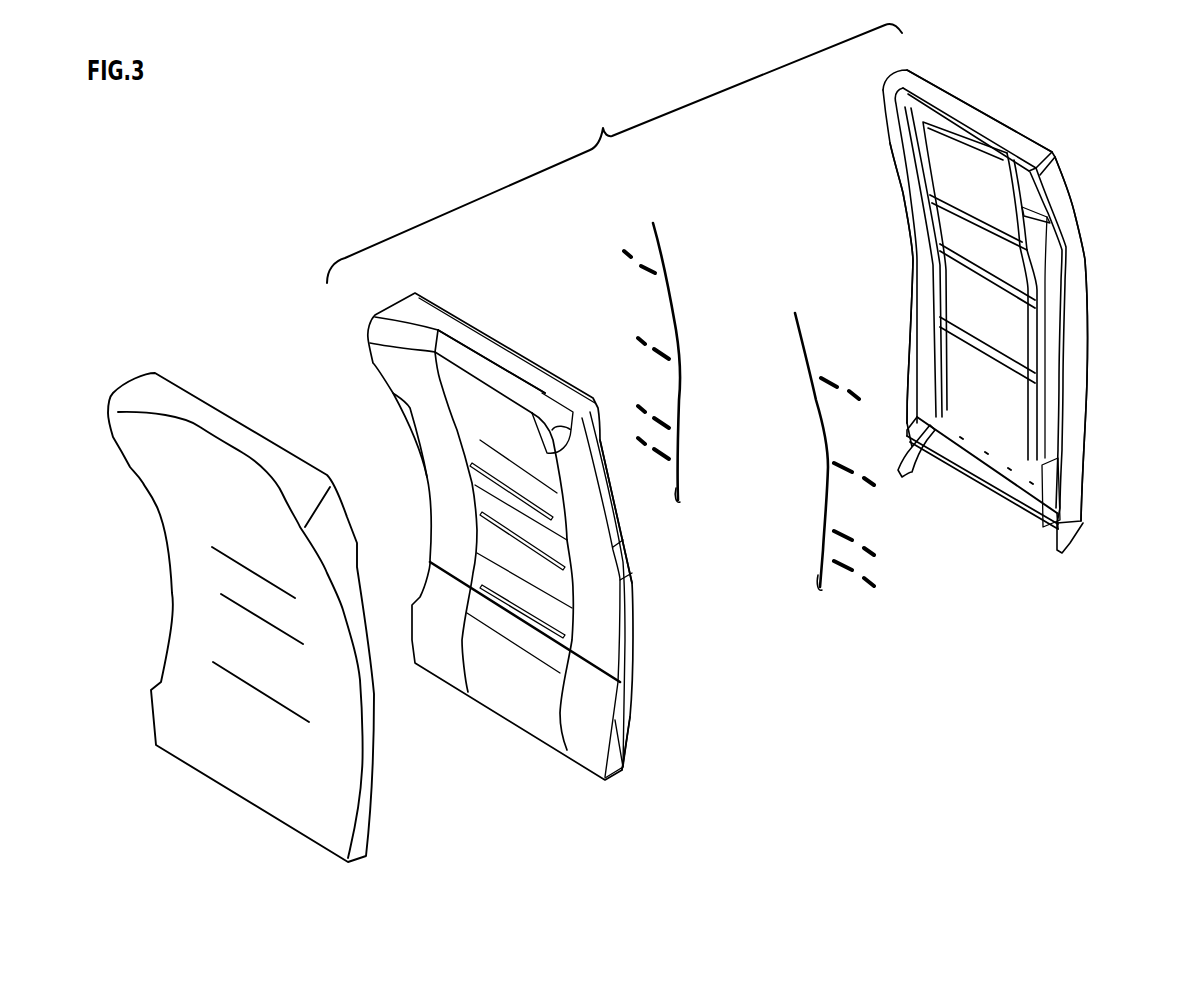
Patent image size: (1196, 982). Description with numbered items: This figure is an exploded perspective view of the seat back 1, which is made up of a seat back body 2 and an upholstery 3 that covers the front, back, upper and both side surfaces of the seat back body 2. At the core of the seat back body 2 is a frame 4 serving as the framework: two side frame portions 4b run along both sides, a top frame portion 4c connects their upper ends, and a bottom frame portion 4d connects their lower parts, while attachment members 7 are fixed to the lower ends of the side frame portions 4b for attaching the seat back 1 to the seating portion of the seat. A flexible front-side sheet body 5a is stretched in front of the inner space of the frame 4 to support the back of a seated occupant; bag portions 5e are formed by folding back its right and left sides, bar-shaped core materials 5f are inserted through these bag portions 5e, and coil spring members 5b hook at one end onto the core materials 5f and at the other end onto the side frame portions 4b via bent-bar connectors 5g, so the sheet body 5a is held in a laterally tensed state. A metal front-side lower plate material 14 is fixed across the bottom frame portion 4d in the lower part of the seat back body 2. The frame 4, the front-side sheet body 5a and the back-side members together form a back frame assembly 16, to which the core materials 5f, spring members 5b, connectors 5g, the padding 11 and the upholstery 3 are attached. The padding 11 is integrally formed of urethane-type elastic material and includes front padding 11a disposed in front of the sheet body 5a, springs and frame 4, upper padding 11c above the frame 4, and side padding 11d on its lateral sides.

The seat back 1 is at (230, 62).
The seat back body 2 is at (614, 153).
The upholstery 3 is at (214, 366).
The frame 4 is at (970, 72).
The side frame portion 4b is at (898, 172).
The top frame portion 4c is at (982, 117).
The bottom frame portion 4d is at (1053, 468).
The front-side sheet body 5a is at (970, 296).
The spring member 5b is at (643, 272).
The bag portion 5e is at (927, 200).
The core material 5f is at (672, 310).
The connector 5g is at (627, 253).
The attachment member 7 is at (902, 442).
The padding 11 is at (464, 280).
The front padding 11a is at (445, 445).
The upper padding 11c is at (500, 353).
The side padding 11d is at (620, 512).
The front-side lower plate material 14 is at (997, 465).
The back frame assembly 16 is at (833, 116).